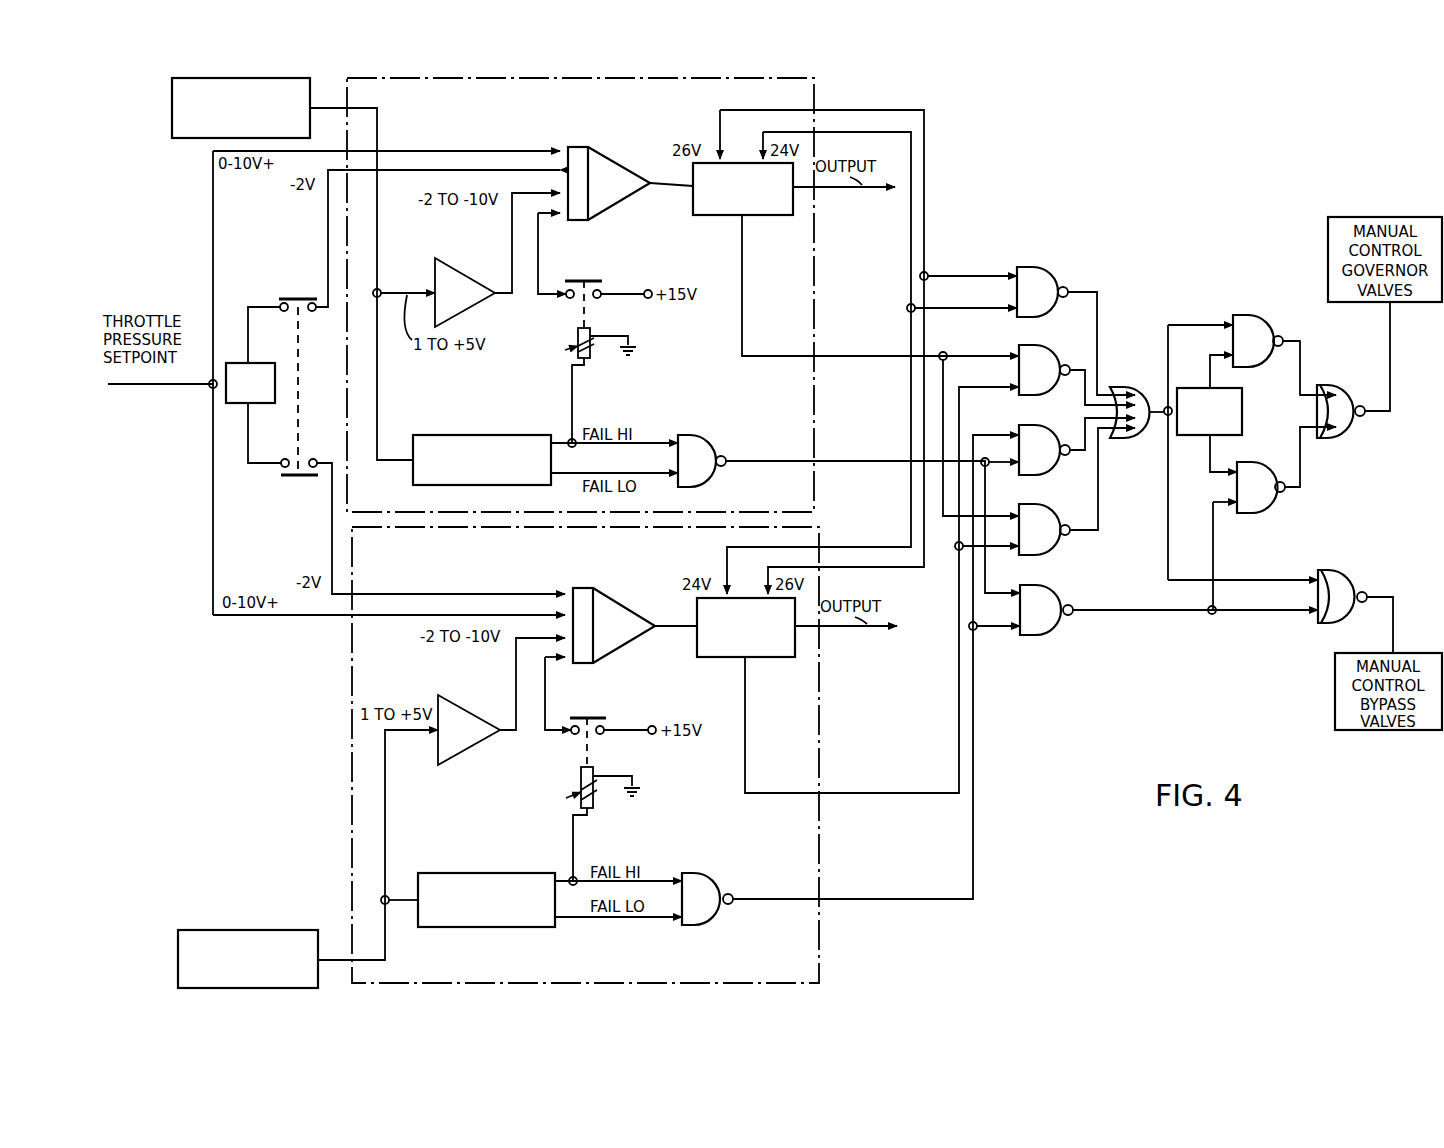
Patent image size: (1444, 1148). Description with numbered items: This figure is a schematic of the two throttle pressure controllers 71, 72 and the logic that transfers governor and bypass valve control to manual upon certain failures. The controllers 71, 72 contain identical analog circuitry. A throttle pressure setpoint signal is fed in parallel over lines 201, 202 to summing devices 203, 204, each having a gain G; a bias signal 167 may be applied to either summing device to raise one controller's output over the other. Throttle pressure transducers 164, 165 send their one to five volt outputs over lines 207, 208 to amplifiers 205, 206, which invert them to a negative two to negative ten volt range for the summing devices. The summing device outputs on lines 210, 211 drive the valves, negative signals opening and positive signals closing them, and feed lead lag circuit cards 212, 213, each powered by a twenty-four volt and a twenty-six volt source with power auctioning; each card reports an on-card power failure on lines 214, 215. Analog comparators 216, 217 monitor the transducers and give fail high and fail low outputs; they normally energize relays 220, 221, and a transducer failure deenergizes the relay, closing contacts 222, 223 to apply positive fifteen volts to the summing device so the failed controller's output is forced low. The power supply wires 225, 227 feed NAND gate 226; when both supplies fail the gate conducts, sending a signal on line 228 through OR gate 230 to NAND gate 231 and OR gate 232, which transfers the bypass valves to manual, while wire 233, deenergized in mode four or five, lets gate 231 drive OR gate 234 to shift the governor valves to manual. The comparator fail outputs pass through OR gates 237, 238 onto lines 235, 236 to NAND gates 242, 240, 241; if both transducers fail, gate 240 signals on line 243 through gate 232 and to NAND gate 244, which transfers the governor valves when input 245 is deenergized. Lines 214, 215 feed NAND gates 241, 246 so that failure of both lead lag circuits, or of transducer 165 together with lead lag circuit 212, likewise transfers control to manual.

The pressure controller 71 is at (860, 506).
The pressure controller 72 is at (860, 538).
The throttle pressure transducer 164 is at (172, 94).
The throttle pressure transducer 165 is at (178, 946).
The bias signal 167 is at (254, 363).
The line 201 is at (213, 210).
The line 202 is at (213, 577).
The summing device 203 is at (596, 150).
The summing device 204 is at (628, 582).
The amplifier 205 is at (450, 266).
The amplifier 206 is at (470, 690).
The line 207 is at (372, 119).
The line 208 is at (388, 943).
The output line 210 is at (676, 190).
The output line 211 is at (684, 620).
The lead lag circuit card 212 is at (726, 216).
The lead lag circuit card 213 is at (728, 658).
The line 214 is at (742, 255).
The line 215 is at (745, 695).
The analog comparator 216 is at (456, 433).
The analog comparator 217 is at (460, 872).
The relay 220 is at (570, 345).
The relay 221 is at (575, 773).
The contact 222 is at (603, 286).
The contact 223 is at (616, 722).
The wire 225 is at (926, 236).
The NAND gate 226 is at (1050, 260).
The wire 227 is at (910, 237).
The line 228 is at (1097, 313).
The OR gate 230 is at (1142, 382).
The NAND gate 231 is at (1272, 310).
The OR gate 232 is at (1333, 570).
The wire 233 is at (1210, 360).
The OR gate 234 is at (1335, 440).
The line 235 is at (760, 461).
The line 236 is at (750, 902).
The OR gate 237 is at (700, 437).
The OR gate 238 is at (704, 876).
The NAND gate 240 is at (1070, 580).
The NAND gate 241 is at (1058, 339).
The NAND gate 242 is at (1056, 419).
The line 243 is at (1160, 608).
The NAND gate 244 is at (1257, 512).
The input 245 is at (1210, 467).
The NAND gate 246 is at (1062, 500).